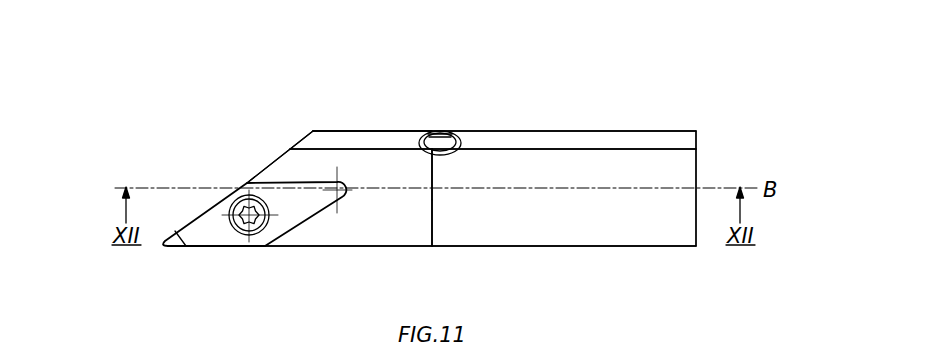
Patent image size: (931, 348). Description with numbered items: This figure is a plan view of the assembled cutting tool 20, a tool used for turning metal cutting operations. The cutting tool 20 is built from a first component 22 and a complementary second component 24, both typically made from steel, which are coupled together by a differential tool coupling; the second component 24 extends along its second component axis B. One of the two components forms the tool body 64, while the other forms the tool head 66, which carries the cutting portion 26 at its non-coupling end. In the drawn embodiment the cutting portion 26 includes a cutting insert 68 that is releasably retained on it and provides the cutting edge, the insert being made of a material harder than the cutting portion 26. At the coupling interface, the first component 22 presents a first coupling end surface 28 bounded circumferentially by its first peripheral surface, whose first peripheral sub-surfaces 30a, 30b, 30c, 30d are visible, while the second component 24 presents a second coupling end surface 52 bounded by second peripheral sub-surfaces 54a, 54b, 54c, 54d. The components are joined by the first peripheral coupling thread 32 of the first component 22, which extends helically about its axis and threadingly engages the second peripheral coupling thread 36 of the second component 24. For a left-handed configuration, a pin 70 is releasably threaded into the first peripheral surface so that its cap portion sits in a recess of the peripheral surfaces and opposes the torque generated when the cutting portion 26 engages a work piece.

The cutting tool 20 is at (674, 64).
The first component 22 is at (560, 34).
The second component 24 is at (296, 84).
The cutting portion 26 is at (190, 262).
The first coupling end surface 28 is at (431, 153).
The first peripheral sub-surface 30a is at (667, 246).
The first peripheral sub-surface 30b is at (675, 173).
The first peripheral sub-surface 30c is at (672, 142).
The first peripheral sub-surface 30d is at (570, 131).
The first peripheral coupling thread 32 is at (430, 180).
The second peripheral coupling thread 36 is at (433, 233).
The second coupling end surface 52 is at (433, 218).
The second peripheral sub-surface 54a is at (335, 247).
The second peripheral sub-surface 54b is at (285, 167).
The second peripheral sub-surface 54c is at (305, 140).
The second peripheral sub-surface 54d is at (342, 131).
The tool body 64 is at (724, 98).
The tool head 66 is at (145, 162).
The cutting insert 68 is at (218, 237).
The pin 70 is at (438, 131).